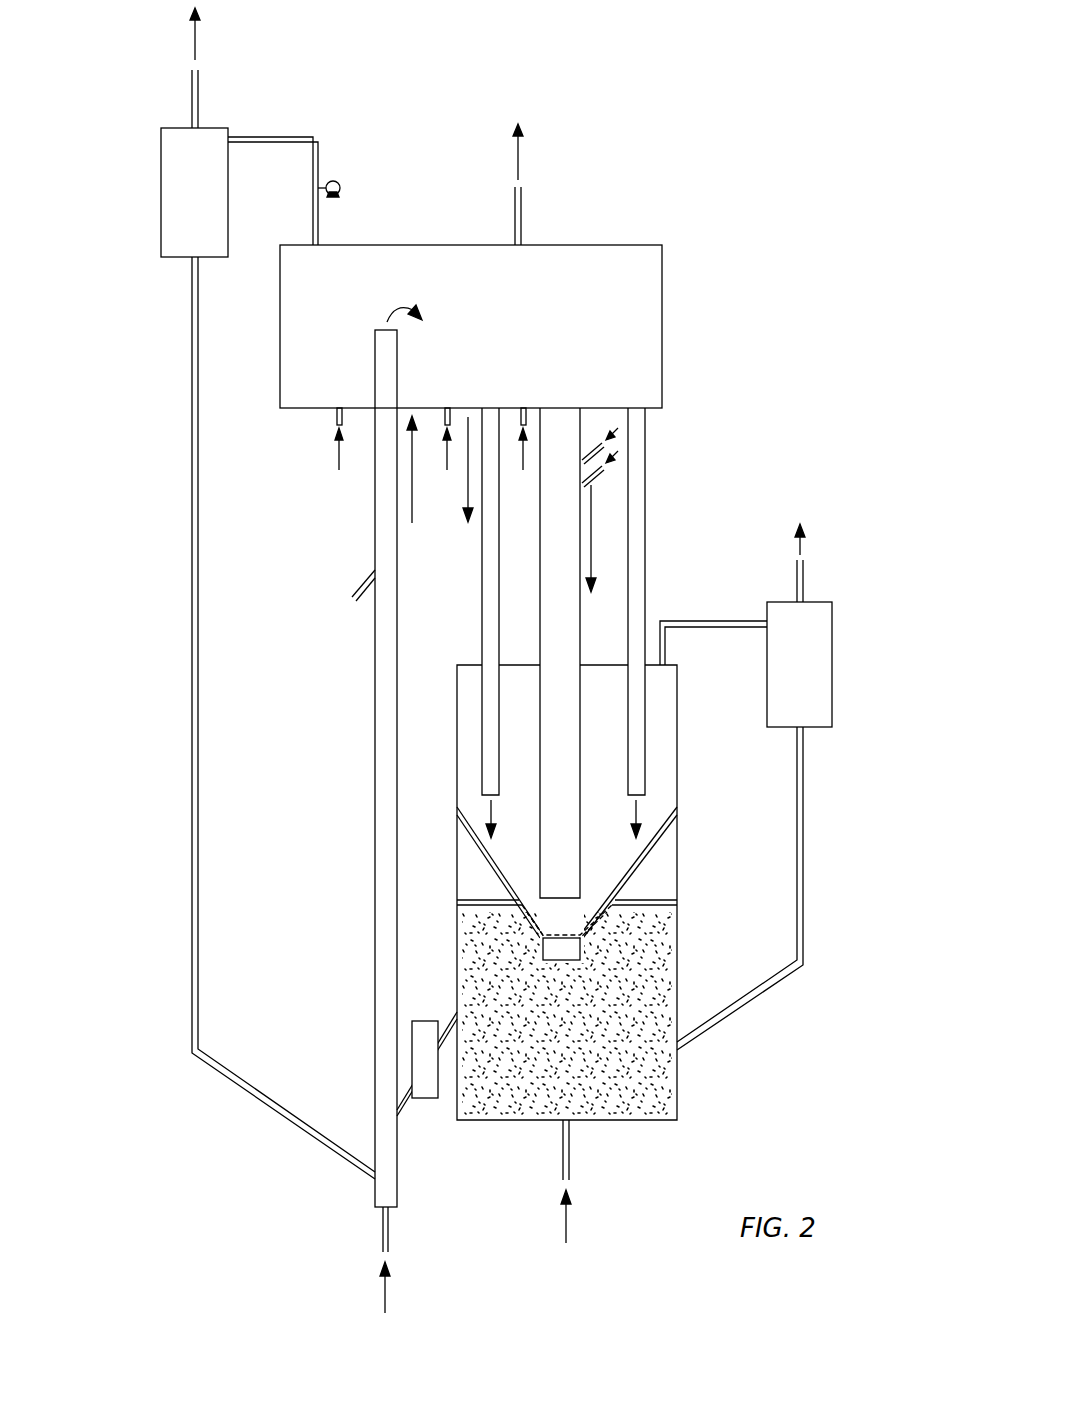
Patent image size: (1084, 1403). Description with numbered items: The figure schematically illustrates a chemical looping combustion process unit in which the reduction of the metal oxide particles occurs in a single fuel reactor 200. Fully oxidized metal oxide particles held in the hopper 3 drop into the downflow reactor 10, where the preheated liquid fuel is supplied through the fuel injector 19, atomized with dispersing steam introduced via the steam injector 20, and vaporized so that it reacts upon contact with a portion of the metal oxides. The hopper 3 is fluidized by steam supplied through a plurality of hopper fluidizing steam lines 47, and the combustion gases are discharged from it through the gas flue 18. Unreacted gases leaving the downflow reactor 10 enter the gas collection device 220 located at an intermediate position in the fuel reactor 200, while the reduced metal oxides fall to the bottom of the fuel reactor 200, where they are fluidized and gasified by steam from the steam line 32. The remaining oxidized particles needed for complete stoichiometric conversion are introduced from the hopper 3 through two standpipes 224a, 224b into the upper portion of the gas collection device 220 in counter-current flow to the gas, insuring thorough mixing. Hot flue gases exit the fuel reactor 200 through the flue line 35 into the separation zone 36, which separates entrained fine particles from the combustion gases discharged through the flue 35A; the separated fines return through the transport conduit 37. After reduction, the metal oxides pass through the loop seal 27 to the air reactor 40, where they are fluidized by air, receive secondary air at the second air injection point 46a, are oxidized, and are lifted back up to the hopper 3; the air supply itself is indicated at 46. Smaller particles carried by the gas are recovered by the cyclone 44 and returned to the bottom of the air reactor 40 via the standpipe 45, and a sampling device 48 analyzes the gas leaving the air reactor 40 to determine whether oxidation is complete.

The hopper 3 is at (476, 335).
The downflow reactor 10 is at (576, 575).
The gas flue 18 is at (522, 217).
The fuel injector 19 is at (595, 473).
The steam injector 20 is at (593, 438).
The loop seal 27 is at (425, 1085).
The steam line 32 is at (563, 1158).
The flue line 35 is at (700, 621).
The flue 35A is at (804, 587).
The separation zone 36 is at (814, 667).
The transport conduit 37 is at (803, 845).
The air reactor 40 is at (375, 531).
The cyclone 44 is at (209, 207).
The standpipe 45 is at (192, 544).
The feed pipe 46 is at (383, 1237).
The second air injection point 46a is at (353, 598).
The hopper fluidizing steam lines 47 is at (339, 468).
The sampling device 48 is at (341, 189).
The fuel reactor 200 is at (588, 1055).
The gas collection device 220 is at (565, 921).
The standpipe 224a is at (485, 608).
The standpipe 224b is at (645, 562).